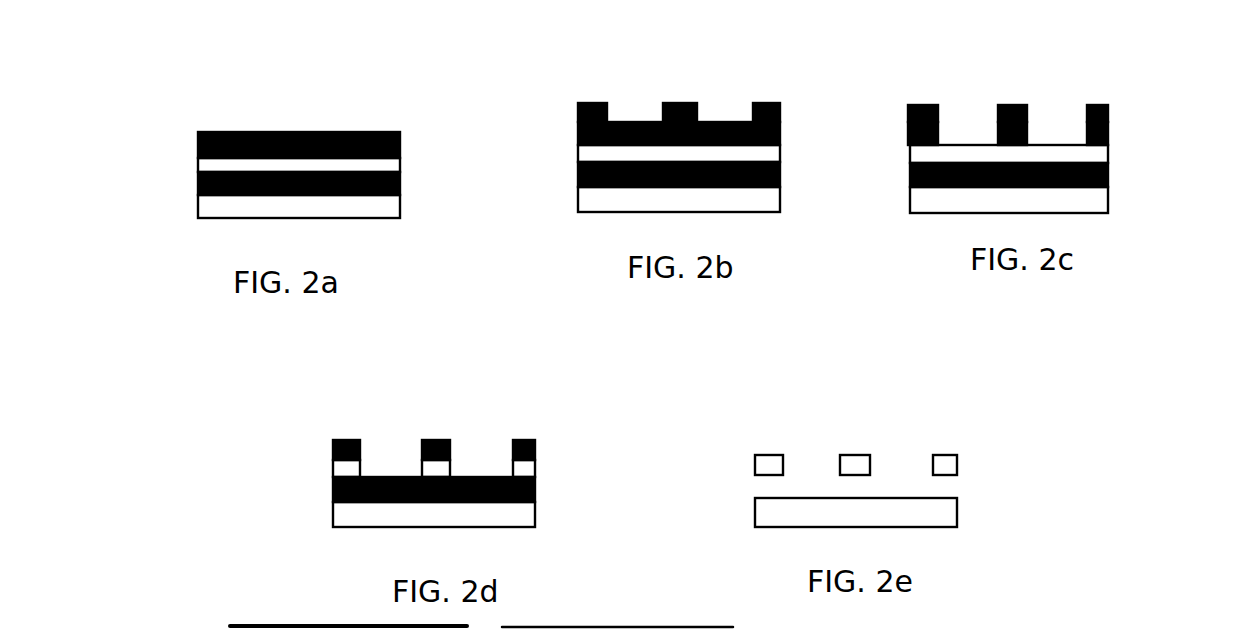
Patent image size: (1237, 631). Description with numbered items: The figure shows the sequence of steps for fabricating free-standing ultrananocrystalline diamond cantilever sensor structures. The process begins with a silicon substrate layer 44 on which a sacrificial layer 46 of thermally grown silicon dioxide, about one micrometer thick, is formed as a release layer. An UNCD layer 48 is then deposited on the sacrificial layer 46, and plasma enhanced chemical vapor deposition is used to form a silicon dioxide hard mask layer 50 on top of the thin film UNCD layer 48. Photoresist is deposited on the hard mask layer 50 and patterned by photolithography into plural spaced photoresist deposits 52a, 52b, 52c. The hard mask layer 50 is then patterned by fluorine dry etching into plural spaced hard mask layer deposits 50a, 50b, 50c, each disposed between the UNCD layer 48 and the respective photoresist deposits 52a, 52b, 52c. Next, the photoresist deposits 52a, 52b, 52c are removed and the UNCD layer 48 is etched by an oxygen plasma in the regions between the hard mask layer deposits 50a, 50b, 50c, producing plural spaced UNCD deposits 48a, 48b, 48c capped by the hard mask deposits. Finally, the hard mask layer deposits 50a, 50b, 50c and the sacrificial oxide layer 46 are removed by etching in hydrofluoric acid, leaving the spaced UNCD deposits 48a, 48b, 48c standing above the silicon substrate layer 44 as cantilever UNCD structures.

In FIG. 2A, the silicon substrate layer 44 is at (205, 216).
In FIG. 2B, the silicon substrate layer 44 is at (590, 205).
In FIG. 2C, the silicon substrate layer 44 is at (927, 205).
In FIG. 2D, the silicon substrate layer 44 is at (343, 523).
In FIG. 2E, the silicon substrate layer 44 is at (772, 515).
In FIG. 2A, the sacrificial layer 46 is at (200, 187).
In FIG. 2B, the sacrificial layer 46 is at (580, 173).
In FIG. 2C, the sacrificial layer 46 is at (910, 177).
In FIG. 2D, the sacrificial layer 46 is at (332, 493).
In FIG. 2A, the UNCD layer 48 is at (205, 167).
In FIG. 2B, the UNCD layer 48 is at (590, 153).
In FIG. 2C, the UNCD layer 48 is at (920, 157).
In FIG. 2D, the UNCD deposit 48a is at (340, 470).
In FIG. 2E, the UNCD deposit 48a is at (762, 457).
In FIG. 2D, the UNCD deposit 48b is at (423, 475).
In FIG. 2E, the UNCD deposit 48b is at (857, 457).
In FIG. 2D, the UNCD deposit 48c is at (535, 462).
In FIG. 2E, the UNCD deposit 48c is at (945, 467).
In FIG. 2A, the SiO2 hard mask layer 50 is at (198, 138).
In FIG. 2B, the SiO2 hard mask layer 50 is at (580, 130).
In FIG. 2C, the hard mask layer deposit 50a is at (908, 137).
In FIG. 2D, the hard mask layer deposit 50a is at (333, 450).
In FIG. 2C, the hard mask layer deposit 50b is at (998, 135).
In FIG. 2D, the hard mask layer deposit 50b is at (442, 440).
In FIG. 2C, the hard mask layer deposit 50c is at (1108, 137).
In FIG. 2D, the hard mask layer deposit 50c is at (523, 440).
In FIG. 2B, the photoresist deposit 52a is at (580, 102).
In FIG. 2C, the photoresist deposit 52a is at (918, 105).
In FIG. 2B, the photoresist deposit 52b is at (673, 102).
In FIG. 2C, the photoresist deposit 52b is at (1023, 103).
In FIG. 2B, the photoresist deposit 52c is at (758, 102).
In FIG. 2C, the photoresist deposit 52c is at (1108, 103).